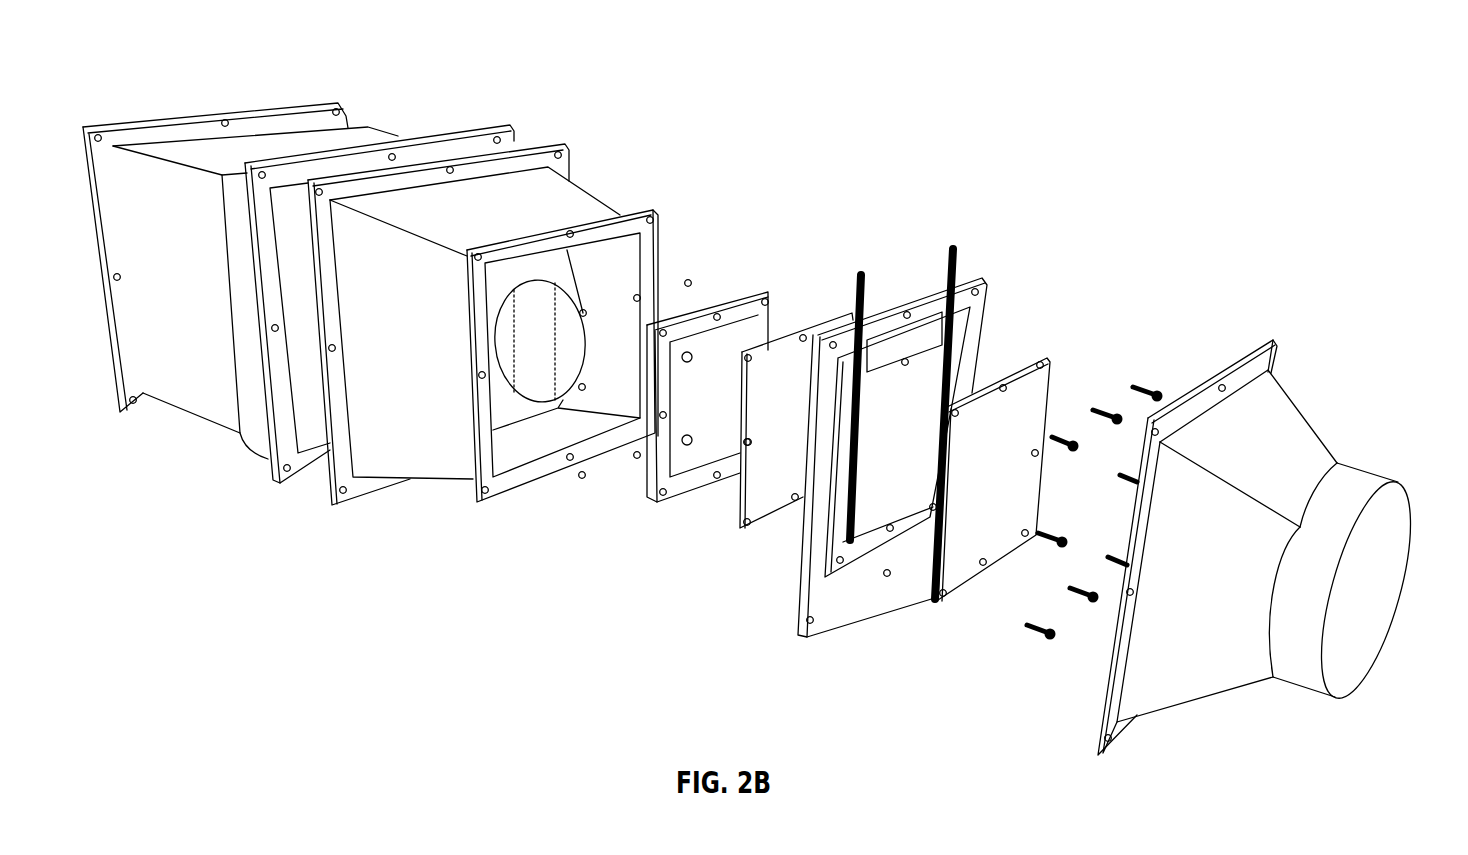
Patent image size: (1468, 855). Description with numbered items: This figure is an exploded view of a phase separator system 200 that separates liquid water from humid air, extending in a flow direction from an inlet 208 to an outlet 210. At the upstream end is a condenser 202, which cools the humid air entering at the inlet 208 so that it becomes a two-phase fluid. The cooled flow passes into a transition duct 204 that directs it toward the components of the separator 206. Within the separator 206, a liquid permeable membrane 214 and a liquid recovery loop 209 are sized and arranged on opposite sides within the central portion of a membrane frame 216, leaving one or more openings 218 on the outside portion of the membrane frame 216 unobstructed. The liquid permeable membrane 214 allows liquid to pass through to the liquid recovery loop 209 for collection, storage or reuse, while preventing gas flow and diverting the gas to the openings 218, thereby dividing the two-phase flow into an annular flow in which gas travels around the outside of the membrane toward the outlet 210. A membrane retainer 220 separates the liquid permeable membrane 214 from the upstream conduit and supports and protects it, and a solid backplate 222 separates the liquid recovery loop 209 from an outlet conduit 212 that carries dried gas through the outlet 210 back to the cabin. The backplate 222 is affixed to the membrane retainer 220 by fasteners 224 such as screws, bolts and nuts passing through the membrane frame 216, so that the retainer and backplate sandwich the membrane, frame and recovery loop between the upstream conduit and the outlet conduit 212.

The phase separator system 200 is at (1223, 66).
The condenser 202 is at (222, 430).
The transition duct 204 is at (588, 192).
The separator 206 is at (866, 244).
The inlet 208 is at (206, 90).
The liquid recovery loop 209 is at (960, 259).
The outlet 210 is at (1361, 670).
The outlet conduit 212 is at (1288, 413).
The liquid permeable membrane 214 is at (810, 340).
The membrane frame 216 is at (976, 347).
The openings 218 is at (886, 345).
The membrane retainer 220 is at (730, 302).
The backplate 222 is at (1038, 388).
The fasteners 224 is at (690, 272).